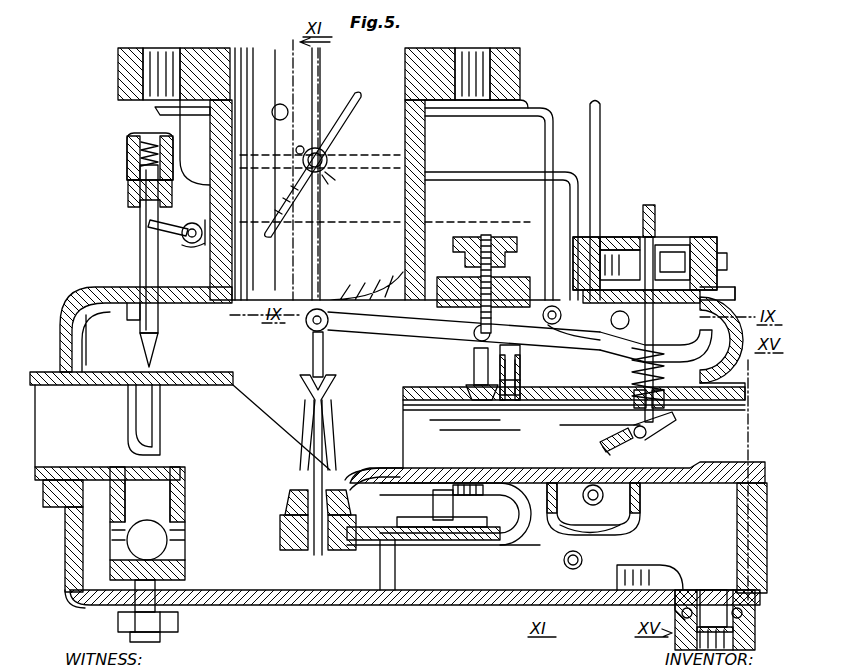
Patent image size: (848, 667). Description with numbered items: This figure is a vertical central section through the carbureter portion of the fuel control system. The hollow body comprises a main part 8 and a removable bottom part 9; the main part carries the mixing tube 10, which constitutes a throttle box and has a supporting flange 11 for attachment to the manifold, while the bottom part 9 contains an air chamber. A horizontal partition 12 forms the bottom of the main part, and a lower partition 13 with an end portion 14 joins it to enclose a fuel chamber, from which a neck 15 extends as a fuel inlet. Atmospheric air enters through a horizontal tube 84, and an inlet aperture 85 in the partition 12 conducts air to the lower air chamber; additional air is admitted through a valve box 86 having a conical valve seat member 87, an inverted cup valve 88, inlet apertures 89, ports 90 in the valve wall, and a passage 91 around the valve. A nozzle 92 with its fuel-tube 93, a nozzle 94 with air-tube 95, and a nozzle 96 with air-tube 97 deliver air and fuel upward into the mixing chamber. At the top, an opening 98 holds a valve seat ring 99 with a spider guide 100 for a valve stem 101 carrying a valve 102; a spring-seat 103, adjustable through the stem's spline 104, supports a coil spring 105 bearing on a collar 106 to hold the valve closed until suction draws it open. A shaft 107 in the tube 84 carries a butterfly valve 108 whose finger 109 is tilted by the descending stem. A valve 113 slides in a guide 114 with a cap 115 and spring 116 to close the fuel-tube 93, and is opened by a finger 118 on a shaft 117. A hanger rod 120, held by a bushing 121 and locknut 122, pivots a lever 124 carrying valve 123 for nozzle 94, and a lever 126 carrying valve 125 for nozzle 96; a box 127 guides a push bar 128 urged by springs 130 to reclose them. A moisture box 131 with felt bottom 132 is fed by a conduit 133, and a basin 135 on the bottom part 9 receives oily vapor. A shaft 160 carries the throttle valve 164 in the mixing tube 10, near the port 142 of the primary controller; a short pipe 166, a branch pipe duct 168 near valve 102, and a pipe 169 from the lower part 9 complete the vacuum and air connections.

The main part 8 is at (95, 340).
The removable bottom part 9 is at (453, 573).
The mixing tube 10 is at (425, 152).
The supporting flange 11 is at (108, 70).
The horizontal partition 12 is at (380, 472).
The lower partition 13 is at (383, 540).
The end portion 14 is at (530, 540).
The neck 15 is at (40, 372).
The horizontal tube 84 is at (415, 412).
The inlet aperture 85 is at (742, 465).
The hollow valve box 86 is at (675, 625).
The conical valve seat member 87 is at (755, 632).
The inverted cup valve 88 is at (735, 608).
The inlet apertures 89 is at (742, 613).
The ports 90 is at (715, 600).
The passage 91 is at (722, 590).
The nozzle 92 is at (120, 455).
The fuel-tube 93 is at (162, 402).
The nozzle 94 is at (334, 425).
The air-tube 95 is at (295, 497).
The nozzle 96 is at (466, 390).
The air-tube 97 is at (455, 506).
The opening 98 is at (736, 292).
The valve seat ring 99 is at (728, 262).
The spider guide 100 is at (660, 250).
The valve stem 101 is at (652, 205).
The valve 102 is at (690, 262).
The spring-seat 103 is at (634, 382).
The spline 104 is at (745, 378).
The coil spring 105 is at (666, 360).
The collar 106 is at (552, 326).
The shaft 107 is at (608, 442).
The butterfly valve 108 is at (603, 448).
The finger 109 is at (652, 440).
The valve 113 is at (160, 325).
The guide 114 is at (128, 192).
The cap 115 is at (127, 138).
The spring 116 is at (140, 152).
The shaft 117 is at (190, 245).
The finger 118 is at (150, 226).
The hanger rod 120 is at (487, 235).
The bushing 121 is at (445, 277).
The locknut 122 is at (460, 237).
The valve 123 is at (313, 348).
The lever 124 is at (365, 312).
The valve 125 is at (474, 360).
The lever 126 is at (540, 370).
The box 127 is at (505, 395).
The push bar 128 is at (500, 350).
The springs 130 is at (510, 400).
The box 131 is at (560, 528).
The bottom 132 is at (598, 533).
The conduit 133 is at (600, 112).
The basin 135 is at (660, 568).
The port 142 is at (278, 104).
The shaft 160 is at (326, 160).
The throttle valve 164 is at (360, 93).
The short pipe 166 is at (155, 111).
The branch pipe duct 168 is at (535, 108).
The pipe 169 is at (500, 172).